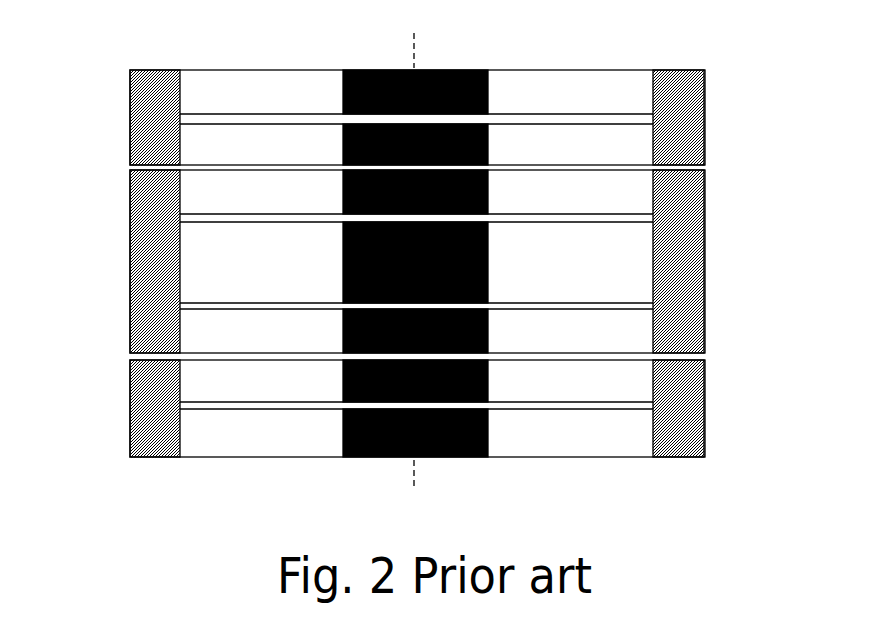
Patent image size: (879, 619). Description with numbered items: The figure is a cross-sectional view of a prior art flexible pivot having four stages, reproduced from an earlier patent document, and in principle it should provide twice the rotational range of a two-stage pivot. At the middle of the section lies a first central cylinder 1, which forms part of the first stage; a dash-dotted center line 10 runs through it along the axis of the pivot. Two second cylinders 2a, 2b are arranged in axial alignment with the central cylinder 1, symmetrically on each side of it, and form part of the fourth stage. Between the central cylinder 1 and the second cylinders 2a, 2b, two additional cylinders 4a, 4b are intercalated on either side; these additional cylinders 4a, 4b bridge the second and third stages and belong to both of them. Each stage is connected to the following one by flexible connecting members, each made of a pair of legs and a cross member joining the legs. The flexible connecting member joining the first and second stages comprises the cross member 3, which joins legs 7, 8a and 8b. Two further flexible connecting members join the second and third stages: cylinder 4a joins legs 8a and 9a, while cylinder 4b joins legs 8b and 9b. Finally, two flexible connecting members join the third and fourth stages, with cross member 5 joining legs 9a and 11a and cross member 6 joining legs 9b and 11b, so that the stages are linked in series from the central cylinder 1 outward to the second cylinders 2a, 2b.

The first central cylinder 1 is at (343, 265).
The second cylinder 2a is at (343, 441).
The second cylinder 2b is at (343, 92).
The cross member 3 is at (685, 240).
The additional cylinder 4a is at (343, 343).
The additional cylinder 4b is at (343, 197).
The cross member 5 is at (685, 403).
The cross member 6 is at (663, 103).
The leg 7 is at (550, 280).
The leg 8a is at (620, 328).
The leg 8b is at (620, 196).
The leg 9a is at (567, 385).
The leg 9b is at (535, 142).
The center axis 10 is at (412, 483).
The leg 11a is at (535, 427).
The leg 11b is at (580, 102).